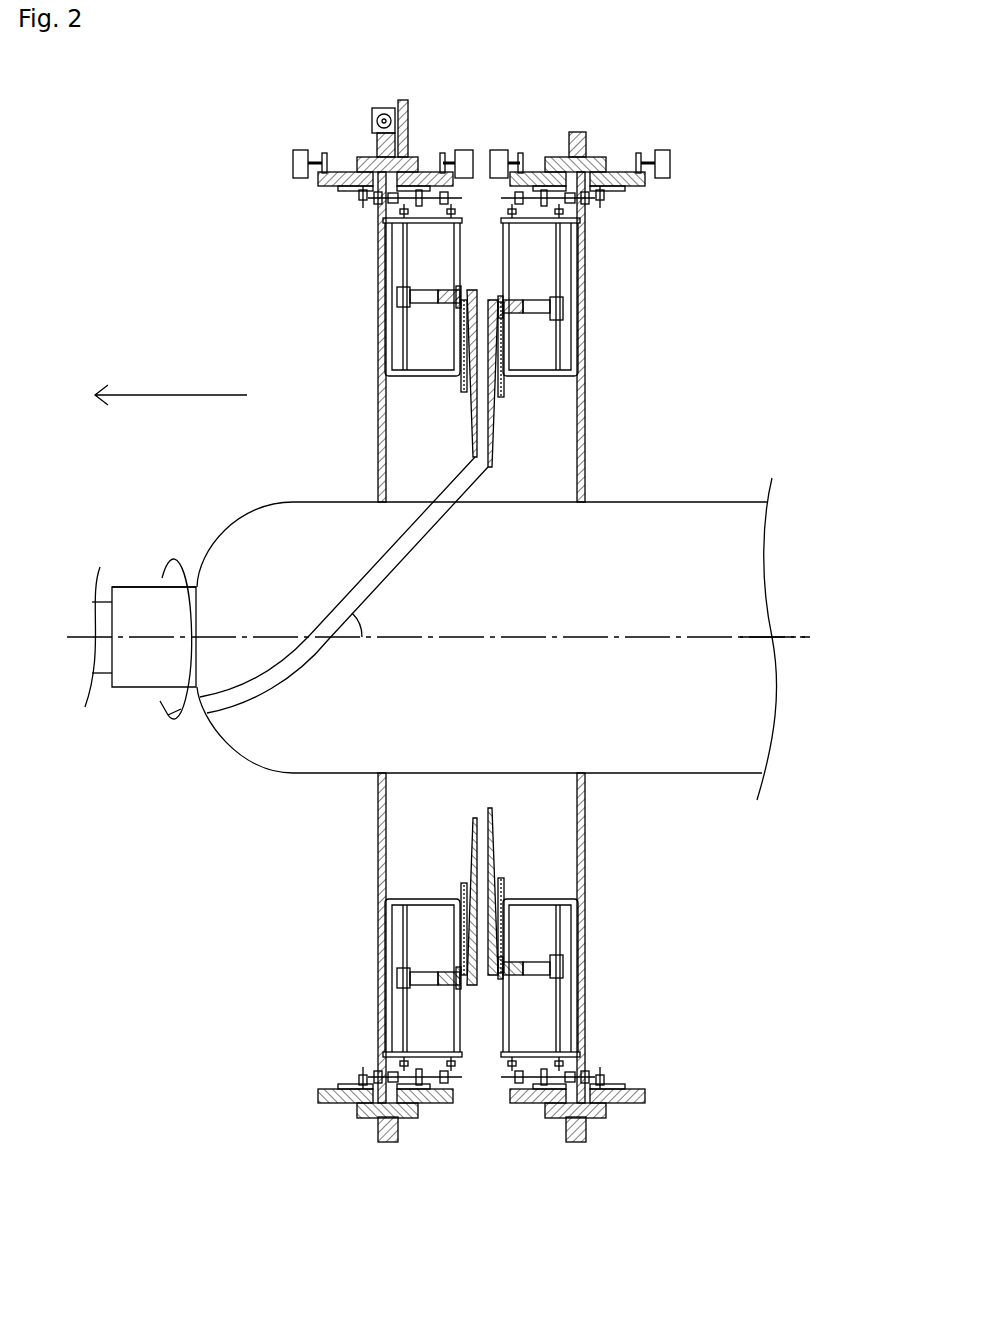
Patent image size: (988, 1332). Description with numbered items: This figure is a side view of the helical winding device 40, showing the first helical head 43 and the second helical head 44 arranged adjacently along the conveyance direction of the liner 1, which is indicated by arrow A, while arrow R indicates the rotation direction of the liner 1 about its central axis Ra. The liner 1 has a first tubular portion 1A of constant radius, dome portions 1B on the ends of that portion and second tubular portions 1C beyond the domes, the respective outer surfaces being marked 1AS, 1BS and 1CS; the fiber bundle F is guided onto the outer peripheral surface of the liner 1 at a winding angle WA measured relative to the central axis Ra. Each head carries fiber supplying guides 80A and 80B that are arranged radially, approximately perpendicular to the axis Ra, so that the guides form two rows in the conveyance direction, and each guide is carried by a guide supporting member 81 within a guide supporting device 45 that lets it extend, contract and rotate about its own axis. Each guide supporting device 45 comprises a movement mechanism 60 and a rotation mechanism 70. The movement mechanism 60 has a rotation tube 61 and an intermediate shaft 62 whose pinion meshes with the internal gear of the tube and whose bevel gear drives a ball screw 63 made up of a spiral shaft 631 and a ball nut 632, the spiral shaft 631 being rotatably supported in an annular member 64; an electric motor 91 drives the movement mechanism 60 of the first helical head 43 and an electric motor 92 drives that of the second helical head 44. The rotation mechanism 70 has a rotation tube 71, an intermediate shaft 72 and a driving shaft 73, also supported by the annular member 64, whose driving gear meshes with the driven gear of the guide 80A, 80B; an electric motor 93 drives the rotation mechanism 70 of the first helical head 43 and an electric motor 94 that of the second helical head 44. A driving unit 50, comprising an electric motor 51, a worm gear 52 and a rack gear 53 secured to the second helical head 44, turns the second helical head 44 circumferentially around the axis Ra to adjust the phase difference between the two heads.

The liner 1 is at (728, 465).
The first tubular portion 1A is at (650, 500).
The outer surface of body portion 1AS is at (692, 500).
The dome portion 1B is at (241, 540).
The outer surface of dome portion 1BS is at (258, 506).
The second tubular portion 1C is at (120, 597).
The outer surface of boss portion 1CS is at (148, 587).
The helical winding device 40 is at (200, 226).
The first helical head 43 is at (655, 261).
The second helical head 44 is at (305, 261).
The guide supporting device 45 is at (362, 303).
The driving unit 50 is at (370, 97).
The electric motor 51 is at (374, 118).
The worm gear 52 is at (383, 104).
The rack gear 53 is at (377, 142).
The movement mechanism 60 is at (316, 117).
The rotation tube 61 is at (337, 187).
The intermediate shaft 62 is at (362, 207).
The ball screw 63 is at (419, 318).
The spiral shaft 631 is at (406, 240).
The ball nut 632 is at (430, 282).
The annular member 64 is at (385, 341).
The rotation mechanism 70 is at (441, 115).
The rotation tube 71 is at (425, 172).
The intermediate shaft 72 is at (516, 198).
The driving shaft 73 is at (508, 258).
The fiber supplying guide 80A is at (493, 440).
The fiber supplying guide 80B is at (472, 440).
The guide supporting member 81 is at (464, 393).
The electric motor 91 is at (660, 150).
The electric motor 92 is at (300, 152).
The electric motor 93 is at (497, 150).
The electric motor 94 is at (463, 150).
The arrow A is at (171, 385).
The fiber bundle F is at (410, 530).
The arrow R is at (176, 652).
The central axis Ra is at (796, 637).
The winding angle WA is at (371, 624).